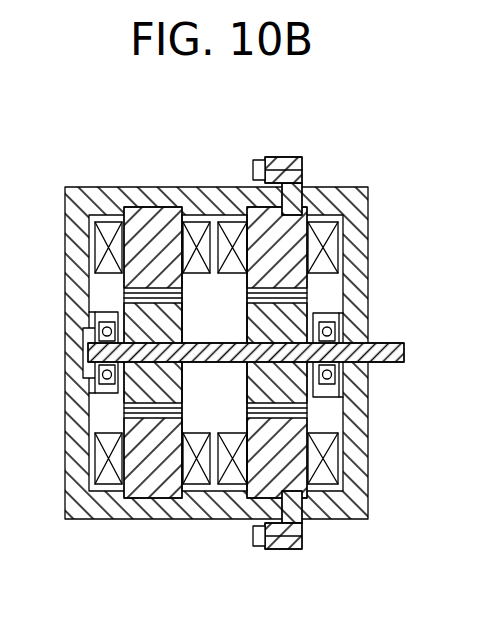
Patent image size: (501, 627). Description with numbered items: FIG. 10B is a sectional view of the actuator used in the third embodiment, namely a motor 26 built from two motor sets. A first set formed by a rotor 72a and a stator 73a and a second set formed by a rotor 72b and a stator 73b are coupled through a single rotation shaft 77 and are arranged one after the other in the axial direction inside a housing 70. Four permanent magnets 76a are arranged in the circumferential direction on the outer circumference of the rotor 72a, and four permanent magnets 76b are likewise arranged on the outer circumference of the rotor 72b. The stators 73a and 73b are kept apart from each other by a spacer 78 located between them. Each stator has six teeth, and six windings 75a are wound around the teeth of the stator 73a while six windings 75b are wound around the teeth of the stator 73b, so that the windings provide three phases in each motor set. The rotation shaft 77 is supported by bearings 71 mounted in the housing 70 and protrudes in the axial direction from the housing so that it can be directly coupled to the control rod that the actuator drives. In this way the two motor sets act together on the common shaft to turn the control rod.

The motor 26 is at (380, 136).
The housing 70 is at (128, 188).
The bearings 71 is at (97, 323).
The rotor 72a is at (150, 326).
The rotor 72b is at (284, 327).
The stator 73a is at (149, 497).
The stator 73b is at (300, 523).
The windings 75a is at (100, 470).
The windings 75b is at (330, 472).
The permanent magnets 76a is at (132, 408).
The permanent magnets 76b is at (297, 408).
The rotation shaft 77 is at (383, 348).
The spacer 78 is at (212, 505).